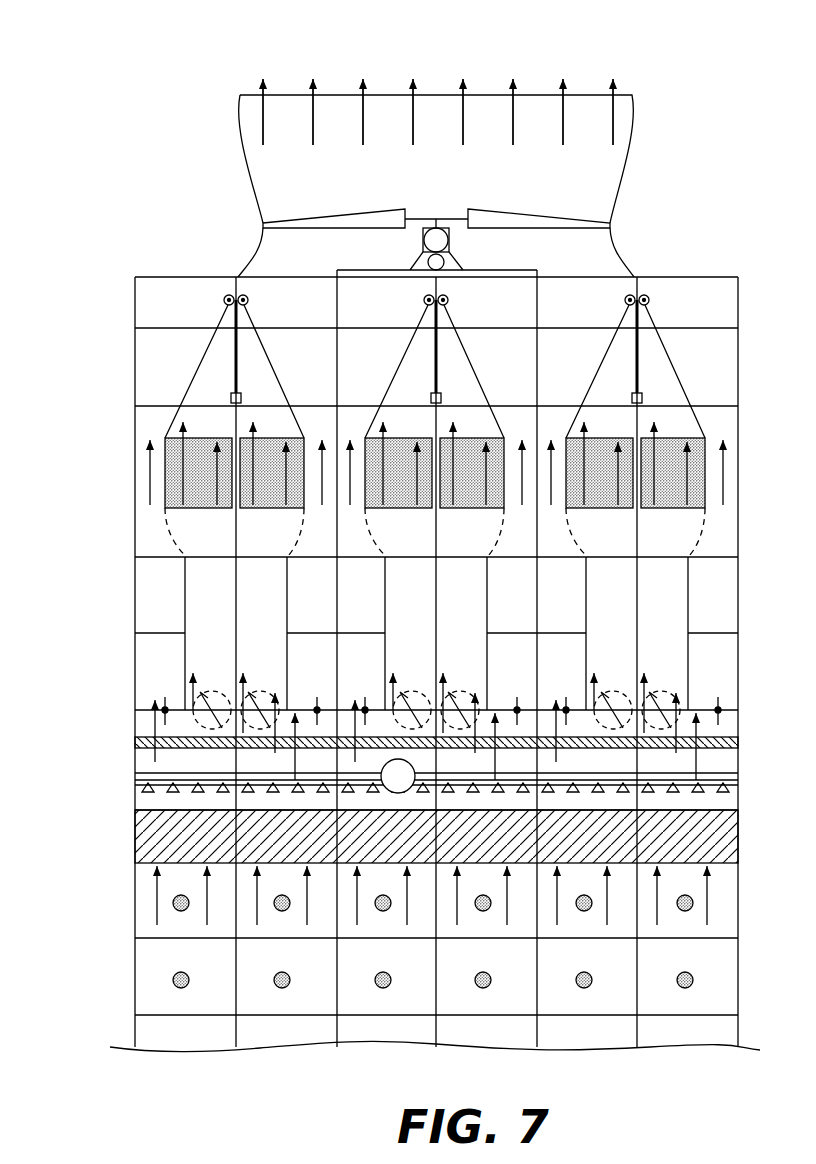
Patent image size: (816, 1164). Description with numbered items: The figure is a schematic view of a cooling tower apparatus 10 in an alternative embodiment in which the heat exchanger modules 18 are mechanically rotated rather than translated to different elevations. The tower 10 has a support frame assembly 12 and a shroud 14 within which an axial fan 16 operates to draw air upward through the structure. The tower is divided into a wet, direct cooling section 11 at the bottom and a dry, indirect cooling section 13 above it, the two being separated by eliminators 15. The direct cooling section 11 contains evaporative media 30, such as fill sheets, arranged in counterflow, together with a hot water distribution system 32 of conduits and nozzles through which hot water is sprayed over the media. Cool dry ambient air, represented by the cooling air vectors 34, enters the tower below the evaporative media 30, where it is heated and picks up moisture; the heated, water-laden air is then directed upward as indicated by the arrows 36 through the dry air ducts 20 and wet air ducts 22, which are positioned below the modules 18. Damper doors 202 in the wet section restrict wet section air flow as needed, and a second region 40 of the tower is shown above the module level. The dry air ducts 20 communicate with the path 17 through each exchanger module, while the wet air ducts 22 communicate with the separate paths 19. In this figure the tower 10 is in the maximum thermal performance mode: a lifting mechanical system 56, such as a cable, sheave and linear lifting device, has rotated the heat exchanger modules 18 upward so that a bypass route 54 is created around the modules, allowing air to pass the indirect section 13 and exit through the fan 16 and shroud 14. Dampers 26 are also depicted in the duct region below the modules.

The cooling tower apparatus 10 is at (652, 57).
The direct cooling section 11 is at (107, 897).
The support frame assembly 12 is at (135, 312).
The indirect cooling section 13 is at (86, 437).
The shroud 14 is at (632, 137).
The eliminators 15 is at (737, 740).
The axial fan 16 is at (498, 211).
The path through exchanger module 17 is at (692, 423).
The heat exchanger module 18 is at (165, 495).
The separate path 19 is at (254, 430).
The dry air duct 20 is at (200, 611).
The wet air duct 22 is at (149, 611).
The damper 26 is at (214, 710).
The evaporative media 30 is at (737, 838).
The hot water distribution system 32 is at (737, 777).
The cooling air vectors 34 is at (693, 905).
The arrows 36 is at (145, 722).
The upper plenum 40 is at (710, 297).
The bypass route 54 is at (150, 432).
The lifting mechanical system 56 is at (228, 295).
The damper doors 202 is at (166, 707).